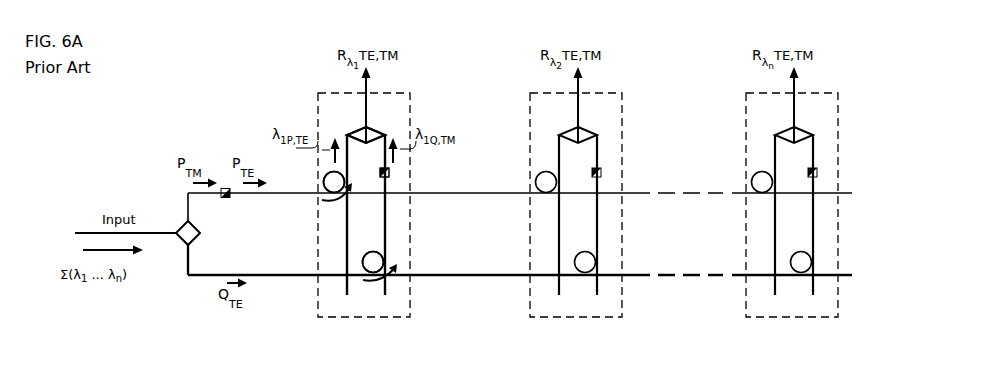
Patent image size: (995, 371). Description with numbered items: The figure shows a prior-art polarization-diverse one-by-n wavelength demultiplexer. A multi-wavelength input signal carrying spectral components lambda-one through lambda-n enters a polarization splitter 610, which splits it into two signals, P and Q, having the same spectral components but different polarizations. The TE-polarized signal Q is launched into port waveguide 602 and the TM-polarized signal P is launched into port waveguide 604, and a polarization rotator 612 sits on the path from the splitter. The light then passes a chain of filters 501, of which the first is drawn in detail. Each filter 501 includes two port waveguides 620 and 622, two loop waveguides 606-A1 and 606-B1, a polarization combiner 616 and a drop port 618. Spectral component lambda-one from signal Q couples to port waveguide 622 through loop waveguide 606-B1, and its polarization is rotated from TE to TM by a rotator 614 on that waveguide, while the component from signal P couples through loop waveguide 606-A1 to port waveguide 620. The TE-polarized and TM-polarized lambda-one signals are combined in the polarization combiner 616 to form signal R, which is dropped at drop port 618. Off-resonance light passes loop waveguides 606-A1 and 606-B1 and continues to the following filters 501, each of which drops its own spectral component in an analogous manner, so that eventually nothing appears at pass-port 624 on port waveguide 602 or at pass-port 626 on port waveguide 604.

The filter 501 is at (576, 192).
The port waveguide 602 is at (188, 256).
The port waveguide 604 is at (188, 222).
The polarization splitter 610 is at (185, 230).
The polarization rotator 612 is at (225, 186).
The polarization rotator 614 is at (390, 173).
The polarization combiner 616 is at (347, 135).
The drop port 618 is at (367, 108).
The port waveguide 620 is at (345, 265).
The port waveguide 622 is at (386, 228).
The pass-port 624 is at (536, 273).
The pass-port 626 is at (536, 192).
The loop waveguide 606-A1 is at (322, 197).
The loop waveguide 606-B1 is at (390, 277).